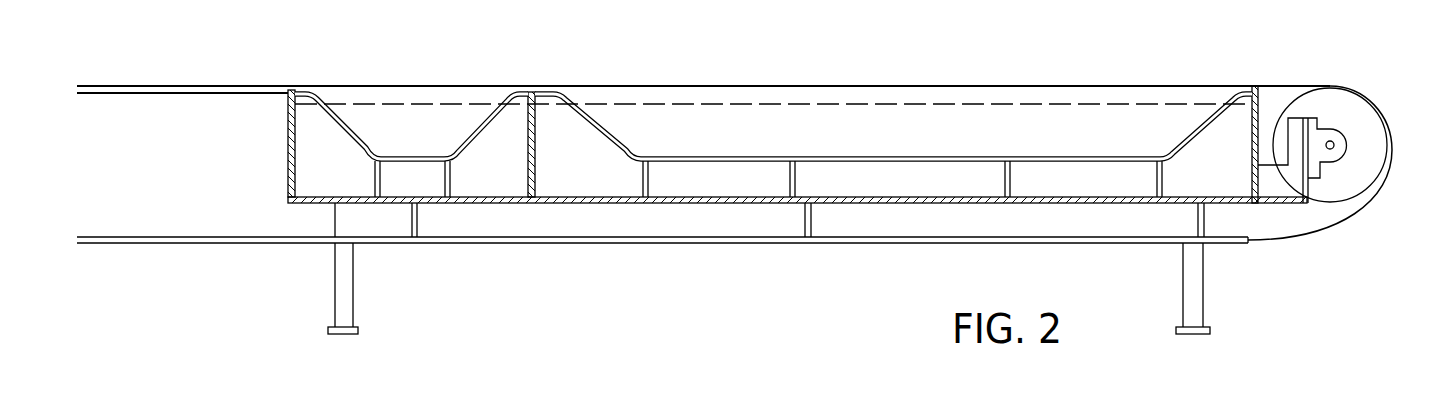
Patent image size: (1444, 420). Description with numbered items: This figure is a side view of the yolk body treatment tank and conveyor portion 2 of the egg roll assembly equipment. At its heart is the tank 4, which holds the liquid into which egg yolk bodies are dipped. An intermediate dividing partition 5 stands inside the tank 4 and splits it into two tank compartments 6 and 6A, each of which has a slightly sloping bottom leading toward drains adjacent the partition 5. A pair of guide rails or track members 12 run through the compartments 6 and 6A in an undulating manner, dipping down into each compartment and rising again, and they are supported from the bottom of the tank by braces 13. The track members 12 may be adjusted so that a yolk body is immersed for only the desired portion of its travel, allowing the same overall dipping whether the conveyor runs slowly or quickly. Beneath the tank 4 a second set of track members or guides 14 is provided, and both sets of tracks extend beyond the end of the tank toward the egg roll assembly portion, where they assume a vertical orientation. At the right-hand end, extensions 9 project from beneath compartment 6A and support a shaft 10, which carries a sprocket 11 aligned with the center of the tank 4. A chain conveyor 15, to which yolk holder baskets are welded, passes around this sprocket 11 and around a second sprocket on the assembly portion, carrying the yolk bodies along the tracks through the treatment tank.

The yolk body treatment tank and conveyor portion 2 is at (946, 35).
The tank 4 is at (288, 153).
The dividing partition 5 is at (537, 133).
The tank compartment 6 is at (495, 174).
The tank compartment 6A is at (590, 174).
The extensions 9 is at (1284, 197).
The shaft 10 is at (1330, 152).
The sprocket 11 is at (1375, 122).
The guide rails or track members 12 is at (693, 156).
The braces 13 is at (374, 177).
The second set of track members or guides 14 is at (690, 245).
The chain conveyor 15 is at (1285, 85).